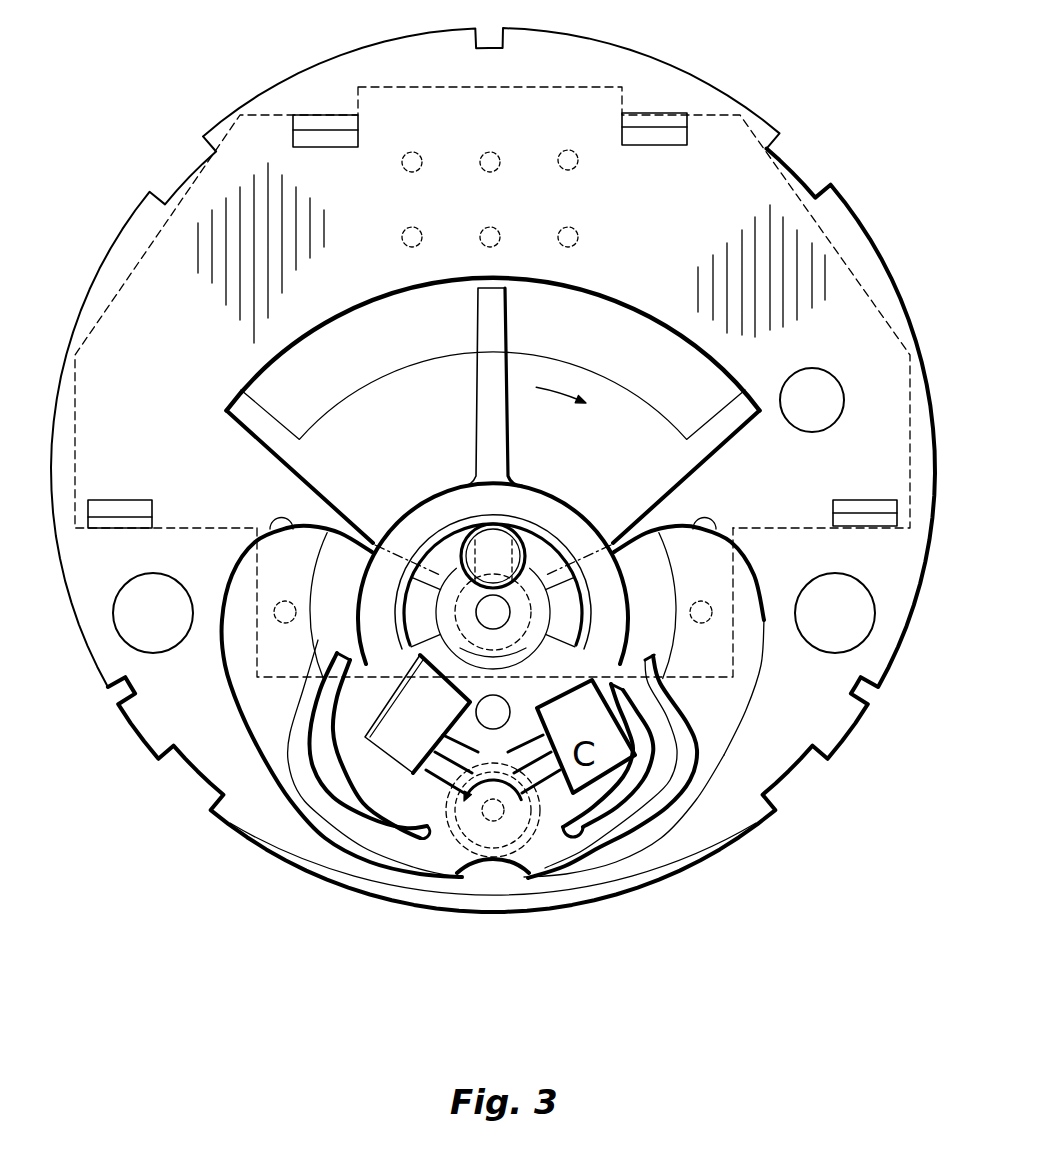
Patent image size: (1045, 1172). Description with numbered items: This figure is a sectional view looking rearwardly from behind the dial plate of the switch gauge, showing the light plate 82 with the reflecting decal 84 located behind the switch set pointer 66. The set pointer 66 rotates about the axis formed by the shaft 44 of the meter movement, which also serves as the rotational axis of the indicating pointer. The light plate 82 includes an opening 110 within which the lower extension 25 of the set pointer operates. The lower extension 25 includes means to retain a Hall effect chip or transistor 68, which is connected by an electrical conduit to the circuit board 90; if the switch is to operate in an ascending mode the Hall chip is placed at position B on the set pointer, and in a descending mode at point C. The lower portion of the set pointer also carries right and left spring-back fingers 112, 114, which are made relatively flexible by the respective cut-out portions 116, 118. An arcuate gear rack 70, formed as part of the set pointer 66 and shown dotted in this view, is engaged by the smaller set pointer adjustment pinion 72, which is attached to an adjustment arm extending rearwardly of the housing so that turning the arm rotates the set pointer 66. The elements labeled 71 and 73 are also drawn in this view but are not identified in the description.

The circuit board 90 is at (836, 232).
The light plate 82 is at (665, 202).
The reflecting decal 84 is at (605, 349).
The switch set pointer 66 is at (487, 332).
The shaft 44 is at (494, 610).
The opening 110 is at (268, 540).
The right spring-back finger 112 is at (748, 688).
The cut-out portion 118 is at (290, 775).
The left spring-back finger 114 is at (322, 695).
The cut-out portion 116 is at (705, 792).
The arcuate gear rack 70 is at (400, 778).
The outer wall 71 is at (690, 812).
The pinion gear 72 is at (458, 840).
The bottom wall 73 is at (330, 790).
The lower extension 25 is at (600, 850).
The Hall effect chip or transistor 68 is at (522, 858).